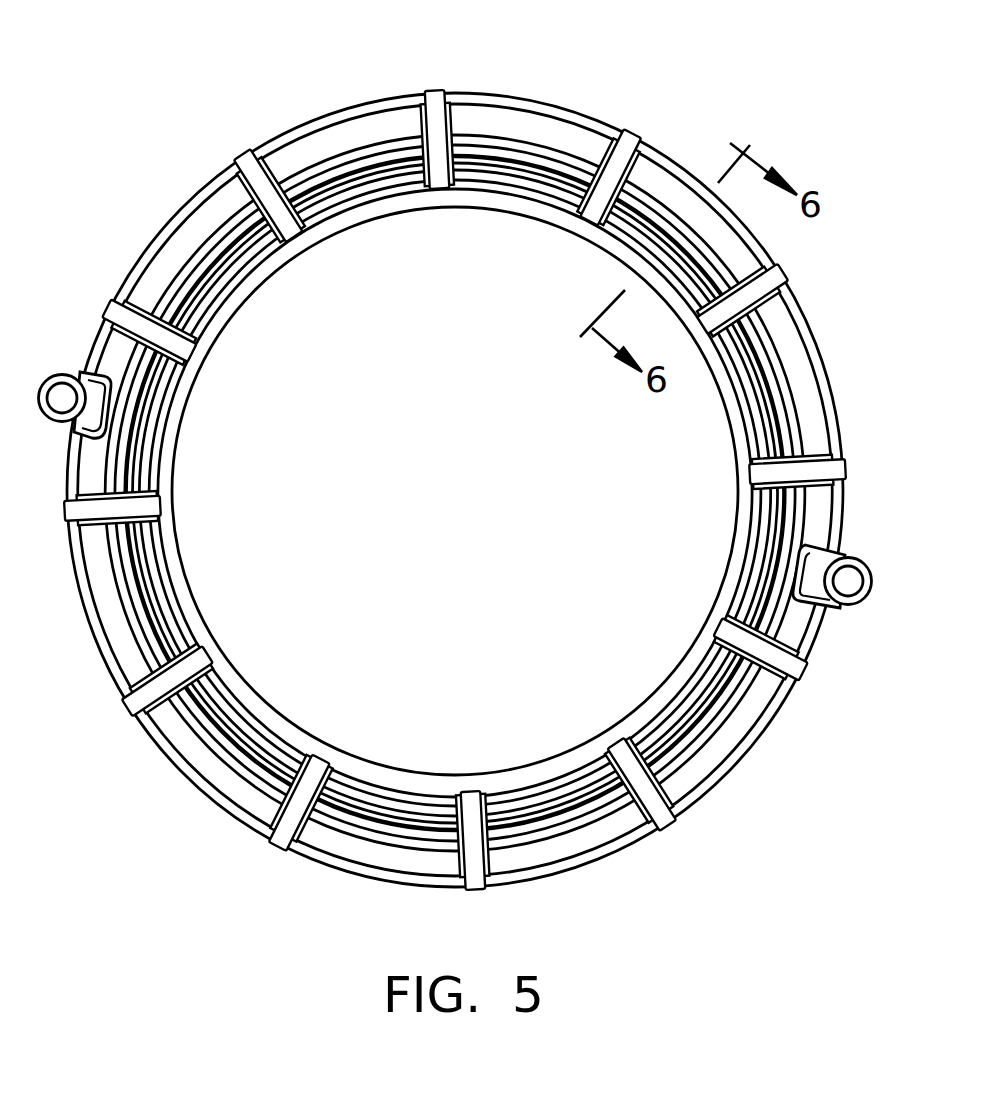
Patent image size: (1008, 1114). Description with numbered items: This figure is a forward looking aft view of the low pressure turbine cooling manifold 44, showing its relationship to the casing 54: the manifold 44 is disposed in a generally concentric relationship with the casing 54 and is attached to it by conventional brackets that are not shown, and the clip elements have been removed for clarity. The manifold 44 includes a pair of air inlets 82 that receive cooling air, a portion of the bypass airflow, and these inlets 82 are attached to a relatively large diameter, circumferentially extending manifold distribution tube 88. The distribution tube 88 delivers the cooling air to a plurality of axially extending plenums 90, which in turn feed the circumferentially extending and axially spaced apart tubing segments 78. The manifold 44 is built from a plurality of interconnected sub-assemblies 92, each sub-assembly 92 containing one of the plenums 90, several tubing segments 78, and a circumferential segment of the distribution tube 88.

The manifold 44 is at (470, 456).
The casing 54 is at (237, 316).
The tubing segments 78 is at (525, 96).
The air inlets 82 is at (46, 375).
The manifold distribution tube 88 is at (785, 323).
The axially extending plenums 90 is at (437, 88).
The manifold sub-assemblies 92 is at (827, 369).